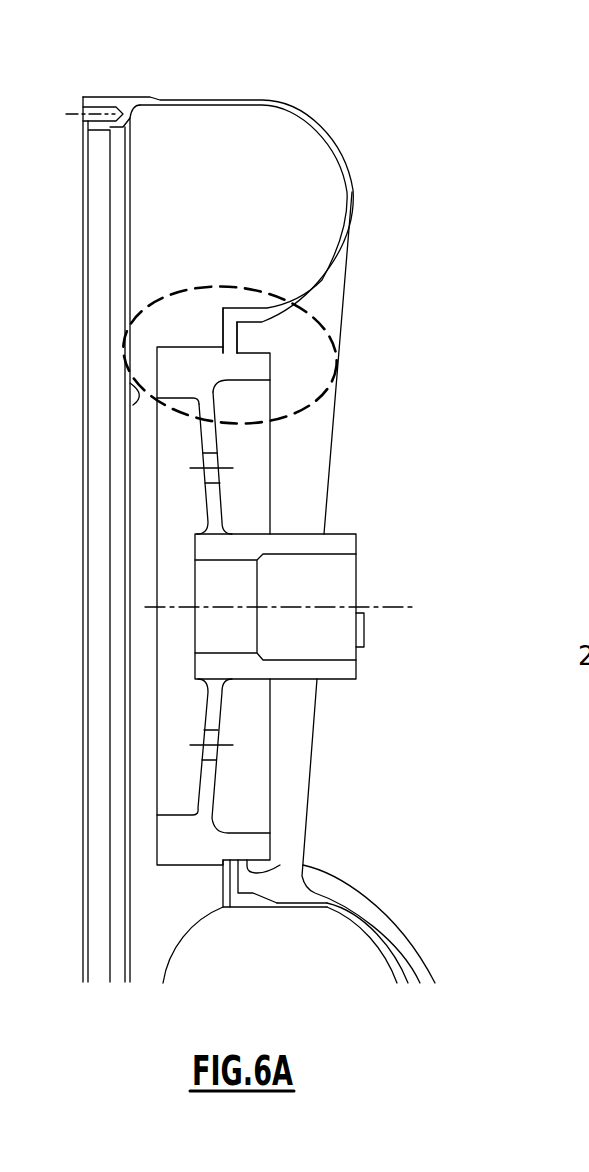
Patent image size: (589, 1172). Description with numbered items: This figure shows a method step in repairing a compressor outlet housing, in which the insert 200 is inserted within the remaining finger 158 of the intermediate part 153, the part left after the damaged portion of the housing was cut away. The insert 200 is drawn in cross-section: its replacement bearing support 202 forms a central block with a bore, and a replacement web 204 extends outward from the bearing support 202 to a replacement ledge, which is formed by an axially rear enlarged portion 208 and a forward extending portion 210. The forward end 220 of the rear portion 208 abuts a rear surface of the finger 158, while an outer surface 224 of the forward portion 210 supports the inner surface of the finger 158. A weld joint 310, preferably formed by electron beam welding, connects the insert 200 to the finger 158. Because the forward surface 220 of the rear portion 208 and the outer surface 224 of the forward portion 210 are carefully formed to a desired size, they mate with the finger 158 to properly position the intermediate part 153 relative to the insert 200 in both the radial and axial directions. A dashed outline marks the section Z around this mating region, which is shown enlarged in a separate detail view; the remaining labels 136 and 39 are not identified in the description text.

The intermediate part 153 is at (125, 83).
The wheel cover 136 is at (330, 157).
The remaining finger 158 is at (223, 333).
The rear portion 208 is at (187, 347).
The gap 39 is at (182, 380).
The section Z is at (138, 403).
The weld joint 310 is at (237, 342).
The forward extending portion 210 is at (257, 368).
The insert 200 is at (463, 518).
The replacement bearing support 202 is at (340, 544).
The replacement web 204 is at (212, 705).
The outer surface 224 is at (280, 865).
The forward end 220 is at (230, 907).